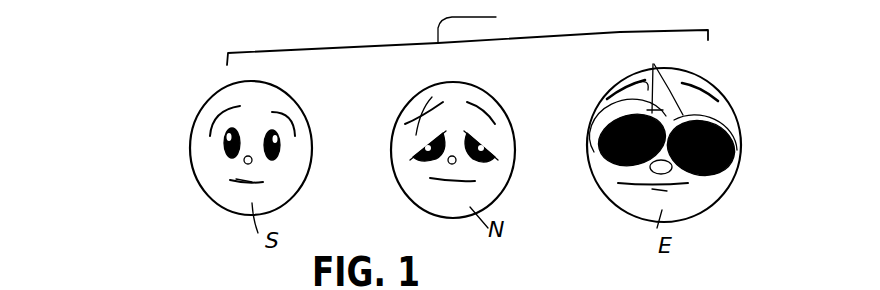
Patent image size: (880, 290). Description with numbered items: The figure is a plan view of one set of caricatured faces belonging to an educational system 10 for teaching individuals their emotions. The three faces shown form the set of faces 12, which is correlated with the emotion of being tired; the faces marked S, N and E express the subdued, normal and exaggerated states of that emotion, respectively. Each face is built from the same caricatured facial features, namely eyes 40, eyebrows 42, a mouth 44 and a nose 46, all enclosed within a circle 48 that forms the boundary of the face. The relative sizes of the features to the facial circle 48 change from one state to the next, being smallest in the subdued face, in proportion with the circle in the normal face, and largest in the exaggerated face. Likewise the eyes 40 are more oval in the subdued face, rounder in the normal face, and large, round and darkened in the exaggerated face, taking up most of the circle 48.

The educational system 10 is at (107, 143).
The set of faces for the tired emotion 12 is at (467, 36).
The eyes 40 is at (222, 148).
The eyebrows 42 is at (228, 108).
The mouth 44 is at (247, 182).
The nose 46 is at (448, 161).
The circle 48 is at (200, 118).